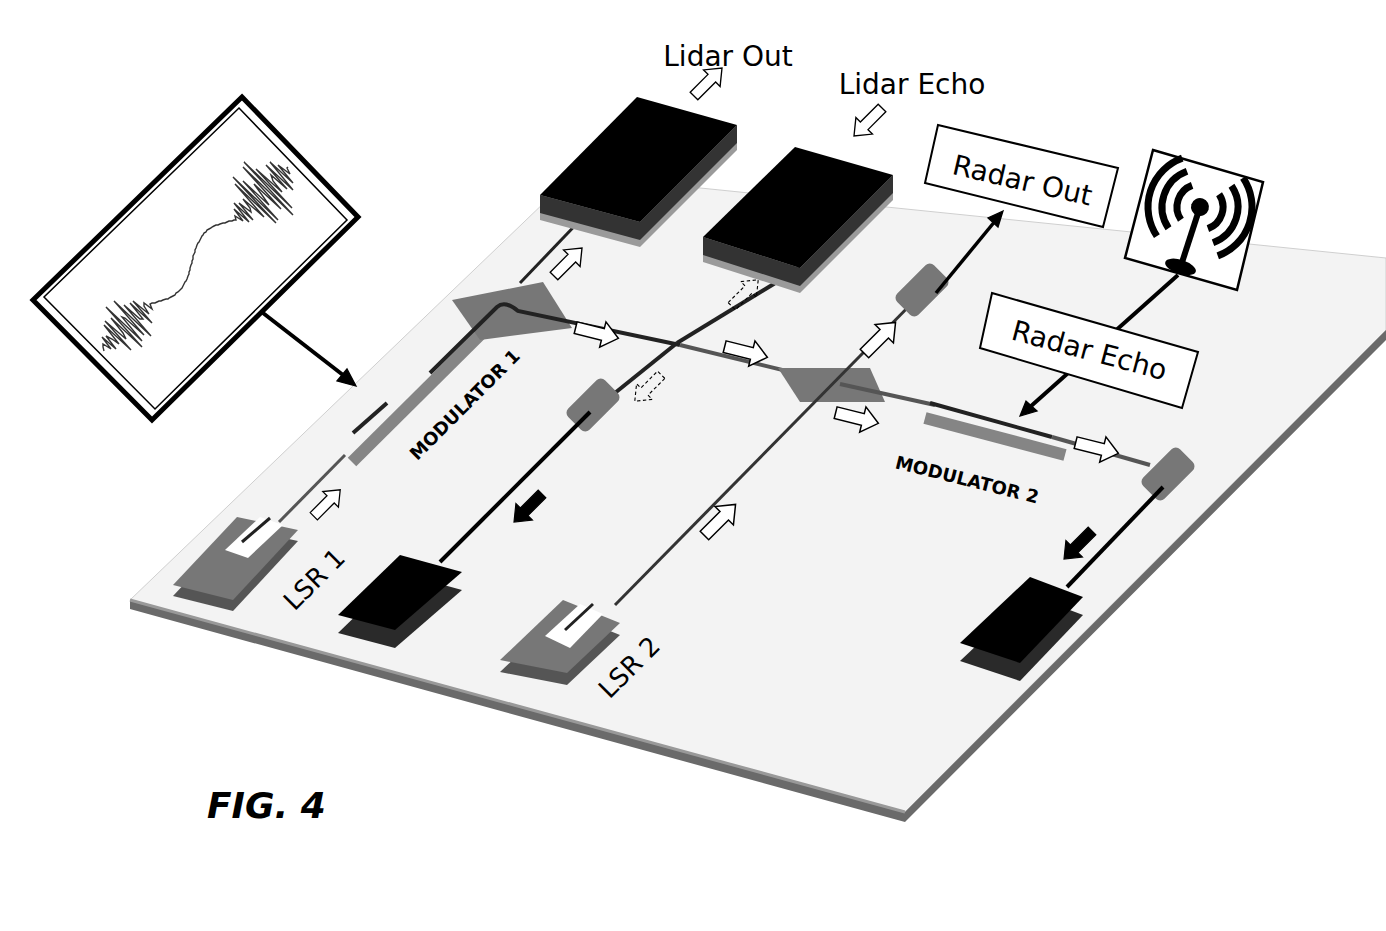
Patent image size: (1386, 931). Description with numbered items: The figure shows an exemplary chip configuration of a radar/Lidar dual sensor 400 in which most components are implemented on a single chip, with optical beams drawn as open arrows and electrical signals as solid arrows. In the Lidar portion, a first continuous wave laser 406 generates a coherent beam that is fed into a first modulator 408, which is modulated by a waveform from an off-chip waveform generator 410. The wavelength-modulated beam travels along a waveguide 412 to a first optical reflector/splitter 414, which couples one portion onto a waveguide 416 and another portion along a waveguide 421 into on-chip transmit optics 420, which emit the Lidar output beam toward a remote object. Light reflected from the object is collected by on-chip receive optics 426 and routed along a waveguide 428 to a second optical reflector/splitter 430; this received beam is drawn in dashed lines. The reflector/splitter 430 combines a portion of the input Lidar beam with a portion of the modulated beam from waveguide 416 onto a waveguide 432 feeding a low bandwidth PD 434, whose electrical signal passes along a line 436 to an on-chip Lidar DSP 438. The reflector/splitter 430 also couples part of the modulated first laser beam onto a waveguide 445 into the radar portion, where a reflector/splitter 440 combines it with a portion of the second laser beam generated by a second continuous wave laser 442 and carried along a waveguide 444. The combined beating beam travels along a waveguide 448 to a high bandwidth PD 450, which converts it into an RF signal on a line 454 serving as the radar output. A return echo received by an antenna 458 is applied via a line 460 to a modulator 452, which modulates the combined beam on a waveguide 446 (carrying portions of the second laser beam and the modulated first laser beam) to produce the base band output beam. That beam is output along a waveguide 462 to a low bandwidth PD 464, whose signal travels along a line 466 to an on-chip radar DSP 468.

The radar/Lidar dual sensor 400 is at (1234, 47).
The first continuous wave laser 406 is at (207, 552).
The first modulator 408 is at (385, 388).
The off-chip waveform generator 410 is at (247, 103).
The waveguide 412 is at (471, 337).
The first optical reflector/splitter 414 is at (477, 294).
The waveguide 416 is at (630, 330).
The on-chip transmit optics 420 is at (592, 140).
The waveguide 421 is at (535, 265).
The on-chip receive optics 426 is at (812, 147).
The waveguide 428 is at (698, 303).
The second optical reflector/splitter 430 is at (677, 375).
The waveguide 432 is at (640, 372).
The low bandwidth PD 434 is at (580, 390).
The line 436 is at (481, 524).
The on-chip Lidar DSP 438 is at (442, 566).
The reflector/splitter 440 is at (827, 378).
The second continuous wave laser 442 is at (518, 655).
The waveguide 444 is at (677, 538).
The waveguide 445 is at (678, 368).
The waveguide 446 is at (890, 400).
The waveguide 448 is at (875, 338).
The high bandwidth PD 450 is at (953, 277).
The modulator 452 is at (1040, 425).
The line 454 is at (960, 242).
The antenna 458 is at (1163, 148).
The line 460 is at (1030, 400).
The waveguide 462 is at (1120, 468).
The low bandwidth PD 464 is at (1197, 468).
The line 466 is at (1128, 522).
The on-chip radar DSP 468 is at (1007, 598).